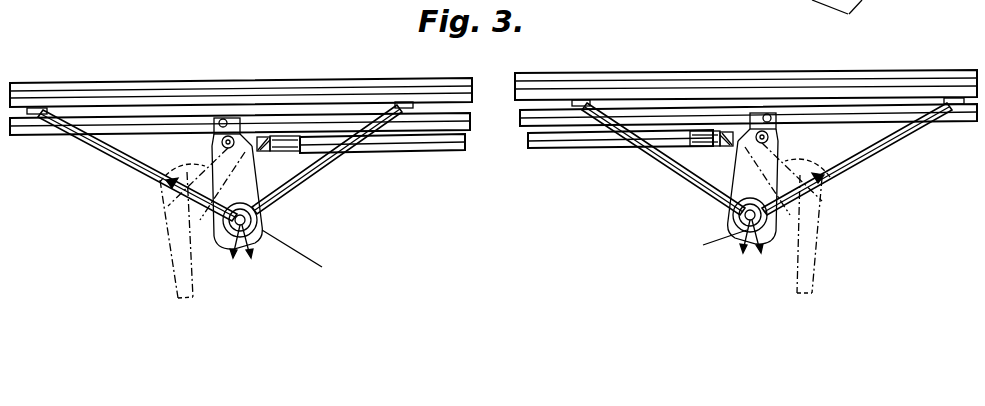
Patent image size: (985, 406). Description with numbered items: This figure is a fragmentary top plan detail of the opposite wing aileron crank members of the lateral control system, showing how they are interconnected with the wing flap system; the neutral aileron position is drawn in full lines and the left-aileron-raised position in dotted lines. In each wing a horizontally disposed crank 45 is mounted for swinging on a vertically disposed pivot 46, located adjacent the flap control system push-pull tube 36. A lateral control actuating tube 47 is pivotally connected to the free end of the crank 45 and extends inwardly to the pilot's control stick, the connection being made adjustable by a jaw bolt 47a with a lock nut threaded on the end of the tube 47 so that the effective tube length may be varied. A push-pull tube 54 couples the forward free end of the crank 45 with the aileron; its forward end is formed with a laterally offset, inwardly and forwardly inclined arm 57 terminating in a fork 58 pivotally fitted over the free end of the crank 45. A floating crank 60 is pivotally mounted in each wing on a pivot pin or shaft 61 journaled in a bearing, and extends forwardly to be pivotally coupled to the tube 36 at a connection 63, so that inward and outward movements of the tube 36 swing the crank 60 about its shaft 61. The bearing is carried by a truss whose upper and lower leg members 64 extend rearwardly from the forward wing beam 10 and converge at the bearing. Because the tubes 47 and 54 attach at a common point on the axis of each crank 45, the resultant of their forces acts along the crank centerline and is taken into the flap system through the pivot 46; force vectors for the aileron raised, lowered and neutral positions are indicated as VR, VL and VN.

The forward wing beam 10 is at (137, 84).
The push-pull tube 36 is at (267, 128).
The crank 45 is at (250, 166).
The pivot 46 is at (262, 223).
The lateral control actuating tube 47 is at (400, 143).
The jaw bolt 47a is at (262, 128).
The push-pull tube 54 is at (182, 272).
The inclined arm 57 is at (193, 163).
The fork 58 is at (221, 119).
The floating crank 60 is at (228, 212).
The pivot pin or shaft 61 is at (218, 258).
The pivotal connection 63 is at (232, 136).
The leg members 64 is at (116, 178).